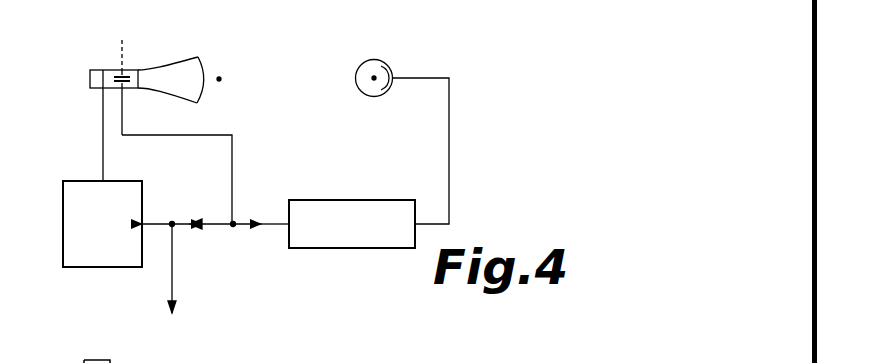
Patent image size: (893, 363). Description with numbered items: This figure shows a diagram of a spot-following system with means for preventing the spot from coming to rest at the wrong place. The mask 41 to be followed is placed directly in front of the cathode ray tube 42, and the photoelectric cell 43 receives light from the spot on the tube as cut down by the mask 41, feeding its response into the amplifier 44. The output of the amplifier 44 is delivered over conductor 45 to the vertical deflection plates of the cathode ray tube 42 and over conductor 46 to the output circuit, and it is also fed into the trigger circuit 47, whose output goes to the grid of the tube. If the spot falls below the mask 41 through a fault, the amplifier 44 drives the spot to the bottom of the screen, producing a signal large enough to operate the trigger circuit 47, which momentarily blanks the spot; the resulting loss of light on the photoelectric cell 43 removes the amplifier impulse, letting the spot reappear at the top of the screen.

The mask 41 is at (219, 79).
The cathode ray tube 42 is at (157, 73).
The photoelectric cell 43 is at (388, 62).
The amplifier 44 is at (362, 200).
The conductor 45 is at (228, 133).
The conductor 46 is at (174, 300).
The trigger circuit 47 is at (68, 183).